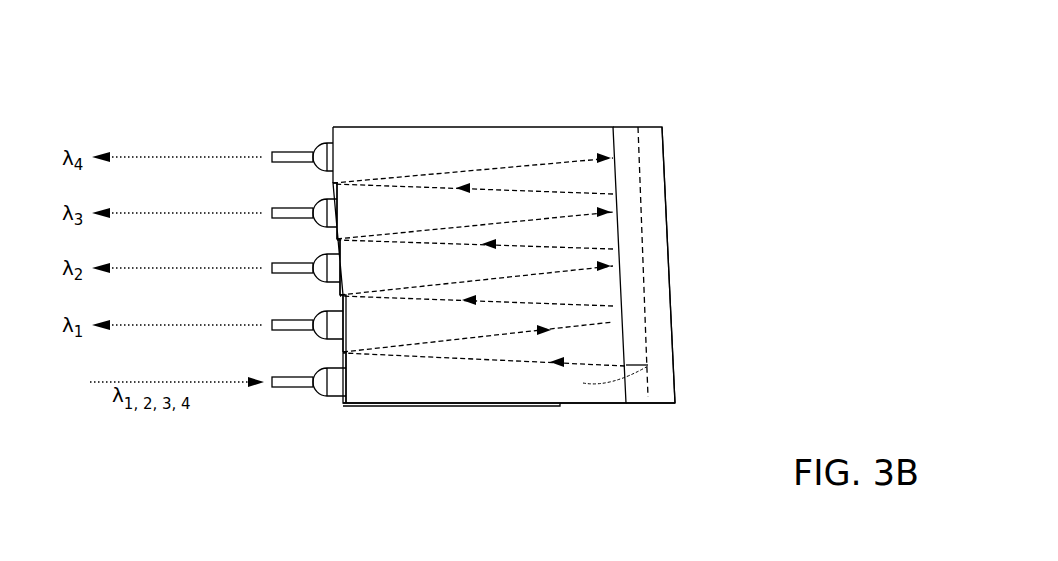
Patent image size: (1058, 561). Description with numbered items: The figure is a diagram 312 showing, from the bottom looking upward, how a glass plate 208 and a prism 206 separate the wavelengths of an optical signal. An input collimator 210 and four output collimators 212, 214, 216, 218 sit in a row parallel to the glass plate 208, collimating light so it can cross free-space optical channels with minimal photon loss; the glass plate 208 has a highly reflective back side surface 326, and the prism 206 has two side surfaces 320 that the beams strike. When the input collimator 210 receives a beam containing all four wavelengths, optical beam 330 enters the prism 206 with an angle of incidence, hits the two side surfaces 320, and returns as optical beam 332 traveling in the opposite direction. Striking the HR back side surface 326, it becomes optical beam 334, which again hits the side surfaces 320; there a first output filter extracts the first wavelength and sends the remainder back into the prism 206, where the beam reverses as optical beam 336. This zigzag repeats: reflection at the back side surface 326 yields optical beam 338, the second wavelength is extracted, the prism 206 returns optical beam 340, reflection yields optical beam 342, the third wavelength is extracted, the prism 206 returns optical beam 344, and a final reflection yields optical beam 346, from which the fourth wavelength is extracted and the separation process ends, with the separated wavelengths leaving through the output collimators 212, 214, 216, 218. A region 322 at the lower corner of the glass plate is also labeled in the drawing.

The diagram 312 is at (222, 80).
The glass plate 208 is at (537, 126).
The side surfaces 320 is at (643, 197).
The prism 206 is at (672, 292).
The filter 322 is at (630, 372).
The optical beam 330 is at (658, 404).
The optical beam 332 is at (513, 405).
The HR back side surface 326 is at (355, 367).
The output collimator 218 is at (330, 178).
The output collimator 216 is at (335, 233).
The output collimator 214 is at (338, 288).
The output collimator 212 is at (340, 345).
The input collimator 210 is at (340, 403).
The optical beam 346 is at (456, 172).
The optical beam 344 is at (540, 192).
The optical beam 342 is at (420, 229).
The optical beam 340 is at (542, 250).
The optical beam 338 is at (430, 288).
The optical beam 336 is at (545, 306).
The optical beam 334 is at (433, 345).